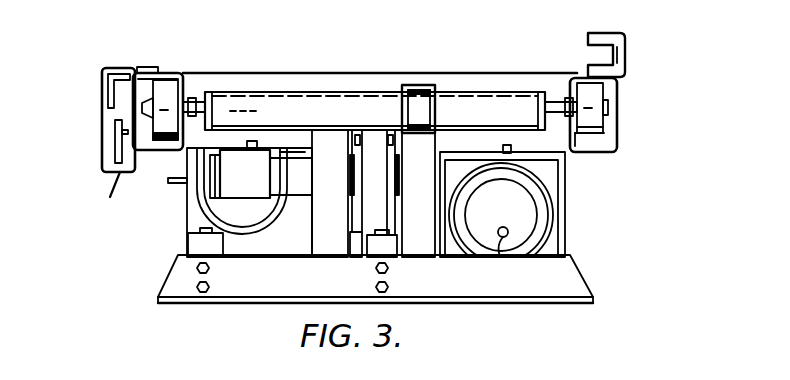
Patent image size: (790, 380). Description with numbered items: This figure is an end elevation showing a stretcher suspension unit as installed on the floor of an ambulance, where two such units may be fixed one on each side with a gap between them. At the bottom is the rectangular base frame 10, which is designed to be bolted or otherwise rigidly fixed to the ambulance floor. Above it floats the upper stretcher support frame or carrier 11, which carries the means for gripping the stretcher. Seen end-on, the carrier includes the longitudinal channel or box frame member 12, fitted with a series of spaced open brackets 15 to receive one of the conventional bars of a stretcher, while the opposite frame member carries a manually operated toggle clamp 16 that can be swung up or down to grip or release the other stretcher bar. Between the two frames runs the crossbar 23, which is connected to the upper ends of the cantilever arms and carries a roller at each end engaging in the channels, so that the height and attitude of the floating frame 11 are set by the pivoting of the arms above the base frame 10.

The base frame 10 is at (518, 282).
The floating stretcher support frame 11 is at (617, 147).
The longitudinal channel frame member 12 is at (142, 74).
The open bracket 15 is at (627, 55).
The toggle clamp 16 is at (102, 118).
The crossbar 23 is at (263, 97).